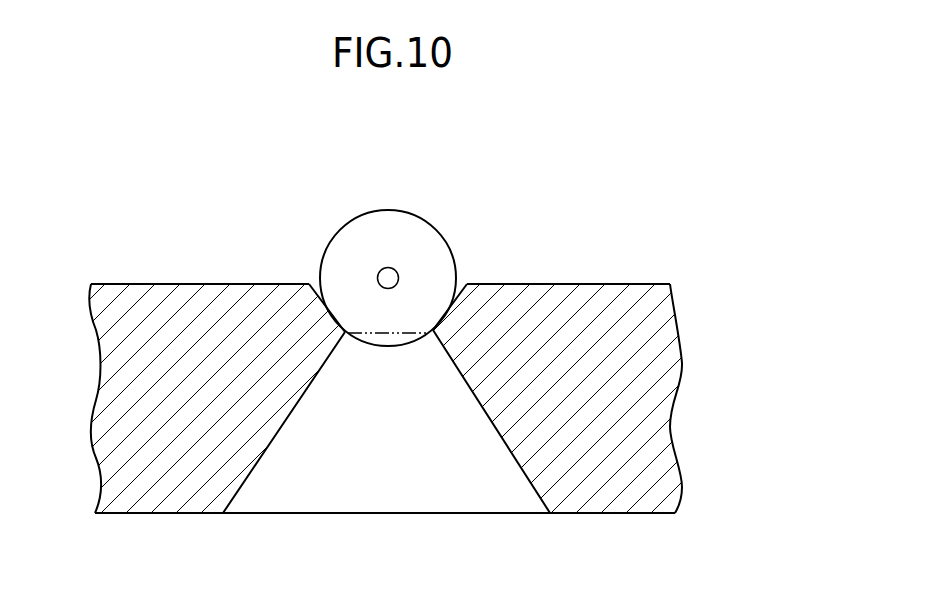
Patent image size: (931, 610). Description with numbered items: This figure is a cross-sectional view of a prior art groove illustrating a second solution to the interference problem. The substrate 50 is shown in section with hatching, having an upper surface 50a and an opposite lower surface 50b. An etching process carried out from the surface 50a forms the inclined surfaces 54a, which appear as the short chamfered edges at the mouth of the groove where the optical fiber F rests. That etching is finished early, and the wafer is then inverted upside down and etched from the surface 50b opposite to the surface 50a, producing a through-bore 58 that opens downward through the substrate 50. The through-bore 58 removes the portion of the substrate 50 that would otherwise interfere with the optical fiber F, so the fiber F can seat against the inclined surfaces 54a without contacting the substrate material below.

The optical fiber F is at (399, 210).
The substrate 50 is at (635, 387).
The surface 50a is at (613, 284).
The surface 50b is at (625, 513).
The inclined surfaces 54a is at (462, 286).
The through-bore 58 is at (502, 443).